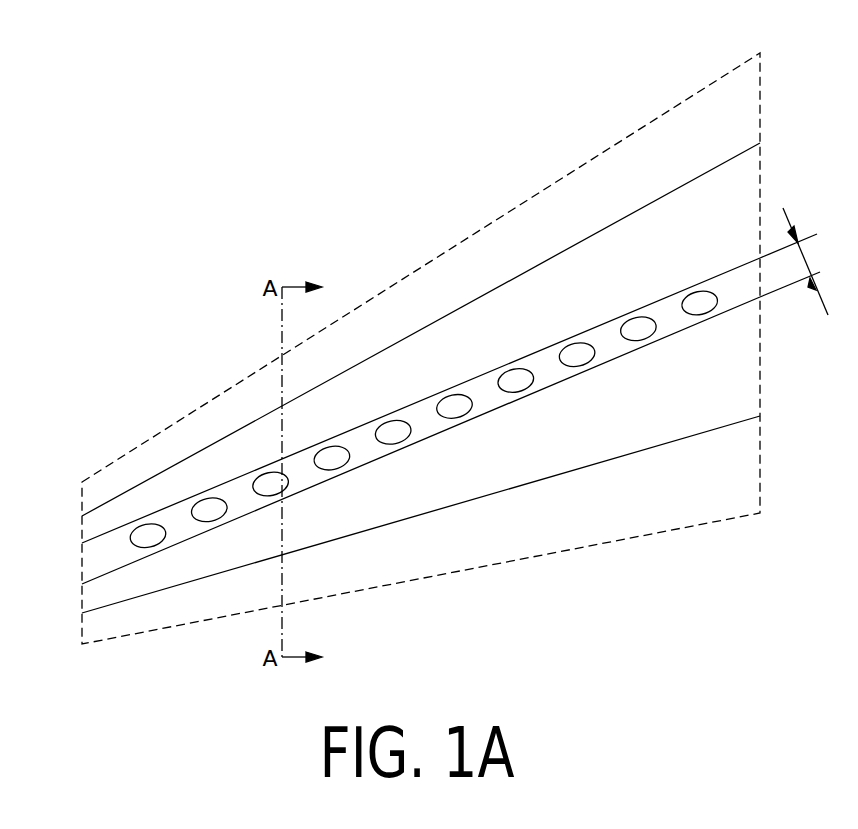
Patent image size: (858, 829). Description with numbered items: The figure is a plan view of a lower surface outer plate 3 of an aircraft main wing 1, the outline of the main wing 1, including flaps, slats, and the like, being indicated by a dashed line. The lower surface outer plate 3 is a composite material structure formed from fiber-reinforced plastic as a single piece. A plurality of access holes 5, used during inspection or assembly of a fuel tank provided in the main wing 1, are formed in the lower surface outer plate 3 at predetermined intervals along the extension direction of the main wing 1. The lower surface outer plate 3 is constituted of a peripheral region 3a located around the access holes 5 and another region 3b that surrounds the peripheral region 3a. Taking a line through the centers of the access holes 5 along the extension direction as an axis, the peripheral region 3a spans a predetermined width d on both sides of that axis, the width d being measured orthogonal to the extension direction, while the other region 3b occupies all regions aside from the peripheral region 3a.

The aircraft main wing 1 is at (350, 178).
The lower surface outer plate 3 is at (693, 166).
The peripheral region 3a is at (487, 388).
The other region 3b is at (506, 463).
The access holes 5 is at (455, 410).
The width d is at (794, 261).